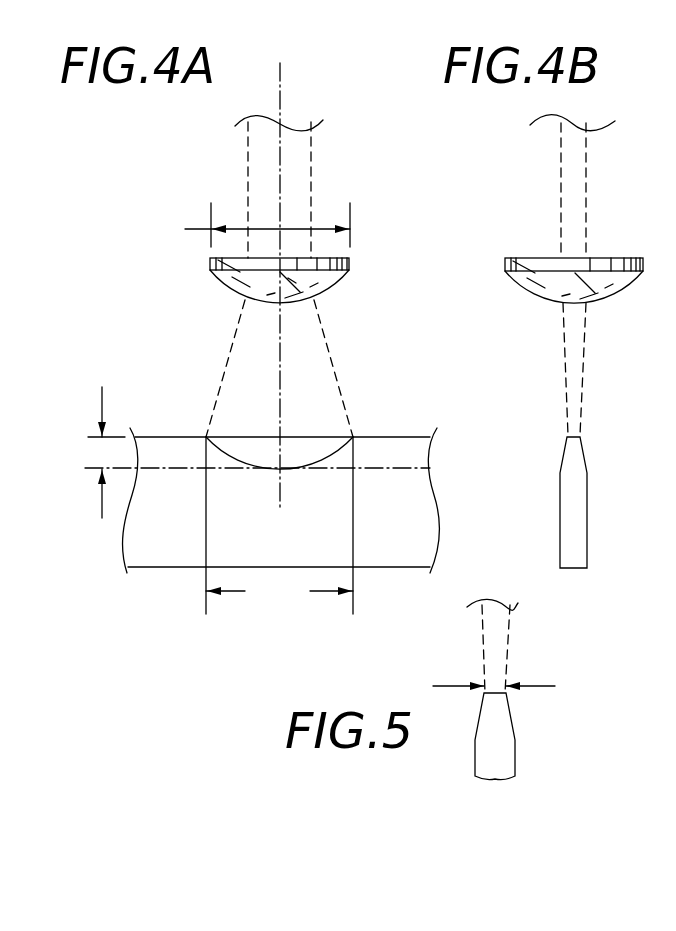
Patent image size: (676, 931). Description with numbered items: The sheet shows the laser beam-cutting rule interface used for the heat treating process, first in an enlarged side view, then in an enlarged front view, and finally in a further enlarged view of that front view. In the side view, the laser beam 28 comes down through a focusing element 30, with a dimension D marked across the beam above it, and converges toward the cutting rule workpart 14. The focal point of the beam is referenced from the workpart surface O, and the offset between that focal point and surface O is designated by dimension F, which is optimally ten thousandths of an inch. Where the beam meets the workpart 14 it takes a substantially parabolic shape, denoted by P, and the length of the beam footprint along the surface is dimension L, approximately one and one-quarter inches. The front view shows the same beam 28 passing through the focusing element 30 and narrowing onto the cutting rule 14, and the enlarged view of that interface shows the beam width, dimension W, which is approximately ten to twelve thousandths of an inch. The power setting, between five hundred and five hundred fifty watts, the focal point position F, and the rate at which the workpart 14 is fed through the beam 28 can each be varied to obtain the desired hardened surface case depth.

In FIG. 4A, the workpiece / wire rod 14 is at (153, 557).
In FIG. 4B, the workpiece / wire rod 14 is at (580, 480).
In FIG. 5, the workpiece / wire rod 14 is at (507, 752).
In FIG. 4A, the laser beam 28 is at (333, 360).
In FIG. 4B, the laser beam 28 is at (582, 372).
In FIG. 5, the laser beam 28 is at (511, 627).
In FIG. 4A, the focusing lens 30 is at (330, 288).
In FIG. 4B, the focusing lens 30 is at (612, 295).
In FIG. 4A, the beam diameter at lens D is at (254, 225).
In FIG. 4A, the dimension F is at (106, 437).
In FIG. 4A, the laser beam dimension L is at (279, 592).
In FIG. 4A, the surface O is at (381, 437).
In FIG. 4A, the parabolic shape P is at (330, 463).
In FIG. 5, the laser beam dimension W is at (509, 687).